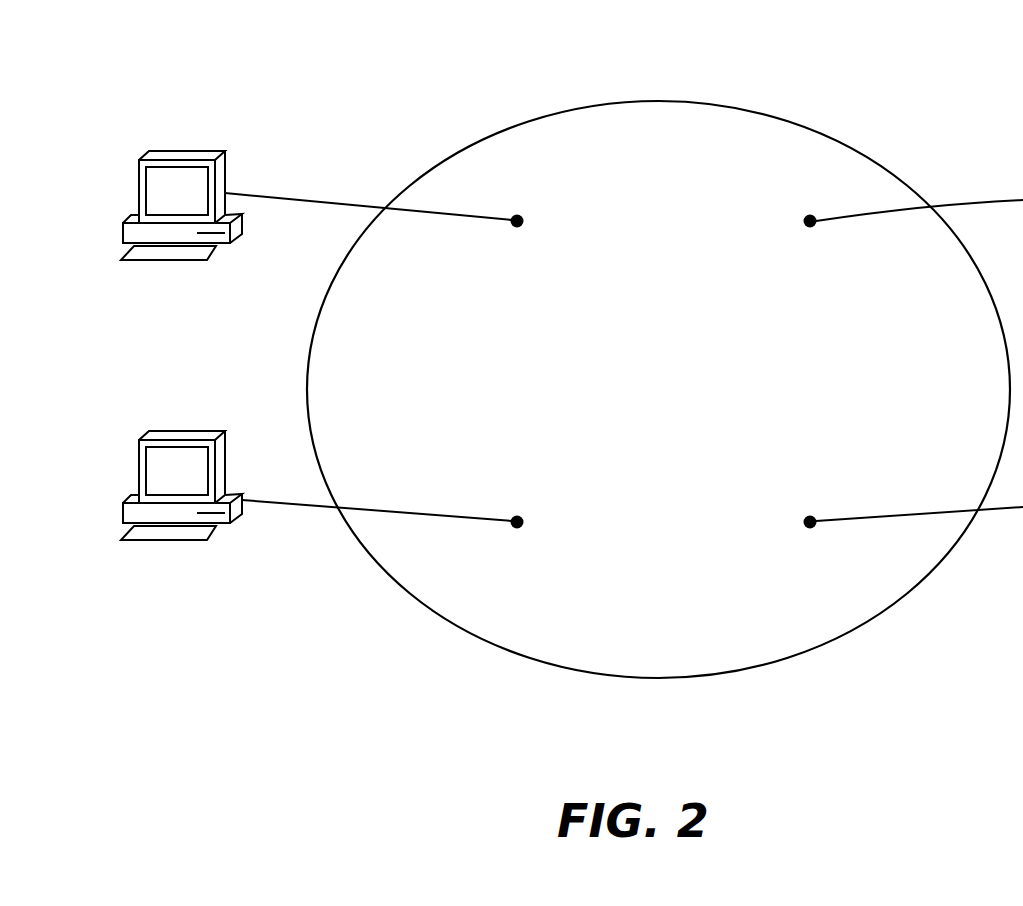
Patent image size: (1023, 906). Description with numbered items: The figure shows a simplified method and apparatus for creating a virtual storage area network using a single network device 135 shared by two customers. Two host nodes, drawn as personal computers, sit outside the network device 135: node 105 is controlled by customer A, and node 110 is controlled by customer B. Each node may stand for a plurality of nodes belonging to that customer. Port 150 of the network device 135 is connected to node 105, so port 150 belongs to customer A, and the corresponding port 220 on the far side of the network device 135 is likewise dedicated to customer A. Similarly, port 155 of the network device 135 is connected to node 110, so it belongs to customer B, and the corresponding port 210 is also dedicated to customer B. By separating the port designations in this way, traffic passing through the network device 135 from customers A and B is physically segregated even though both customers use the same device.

The node 105 is at (180, 437).
The node 110 is at (190, 160).
The network device 135 is at (388, 582).
The port 150 is at (518, 528).
The port 155 is at (519, 215).
The port 210 is at (811, 214).
The port 220 is at (808, 530).